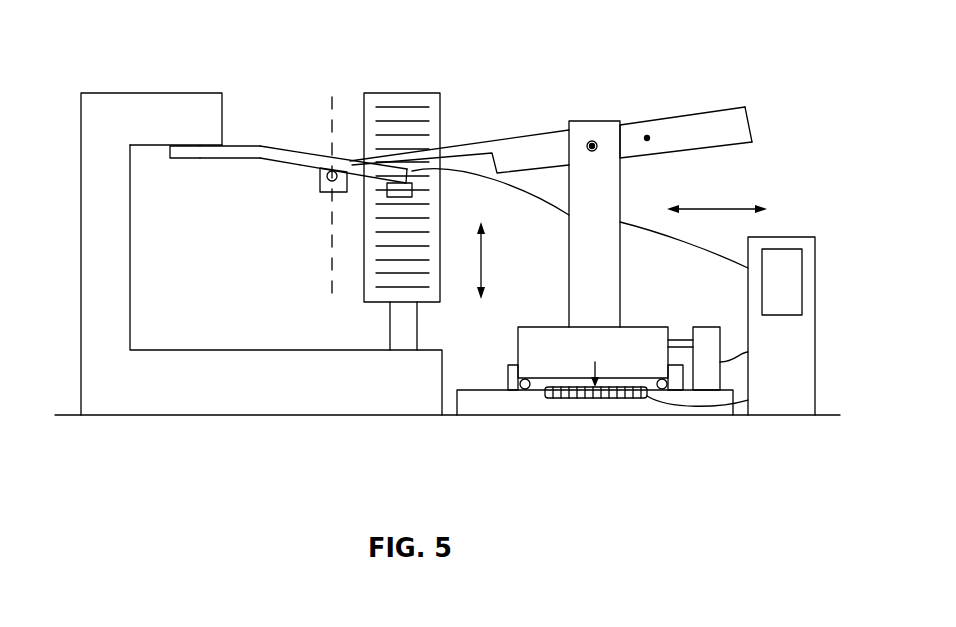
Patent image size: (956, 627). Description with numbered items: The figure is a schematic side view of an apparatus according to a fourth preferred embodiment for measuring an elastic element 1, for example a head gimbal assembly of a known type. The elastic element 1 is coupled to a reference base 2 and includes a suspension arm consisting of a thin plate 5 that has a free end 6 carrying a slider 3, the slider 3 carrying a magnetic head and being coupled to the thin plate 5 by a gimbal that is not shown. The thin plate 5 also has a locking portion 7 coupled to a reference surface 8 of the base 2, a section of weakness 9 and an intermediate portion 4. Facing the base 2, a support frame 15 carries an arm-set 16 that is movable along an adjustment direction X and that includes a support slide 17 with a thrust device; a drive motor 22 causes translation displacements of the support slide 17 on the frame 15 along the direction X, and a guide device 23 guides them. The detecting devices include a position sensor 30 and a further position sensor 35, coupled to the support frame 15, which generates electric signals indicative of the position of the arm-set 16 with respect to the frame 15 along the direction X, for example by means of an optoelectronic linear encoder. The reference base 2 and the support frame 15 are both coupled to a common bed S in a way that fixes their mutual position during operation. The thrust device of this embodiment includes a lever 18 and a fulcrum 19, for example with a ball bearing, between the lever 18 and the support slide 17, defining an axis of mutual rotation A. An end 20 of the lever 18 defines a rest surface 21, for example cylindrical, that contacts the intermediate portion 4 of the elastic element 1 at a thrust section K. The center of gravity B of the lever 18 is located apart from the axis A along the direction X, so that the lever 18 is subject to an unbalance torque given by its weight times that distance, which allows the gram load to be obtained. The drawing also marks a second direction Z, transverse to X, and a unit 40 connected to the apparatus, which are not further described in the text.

The elastic element 1 is at (288, 115).
The reference base 2 is at (178, 368).
The slider 3 is at (388, 192).
The intermediate portion 4 is at (302, 158).
The thin plate 5 is at (240, 143).
The free end 6 is at (407, 168).
The locking portion 7 is at (197, 150).
The reference surface 8 is at (147, 152).
The section of weakness 9 is at (263, 152).
The support frame 15 is at (682, 407).
The arm-set 16 is at (738, 85).
The support slide 17 is at (605, 275).
The lever 18 is at (738, 130).
The fulcrum 19 is at (592, 141).
The end of lever 20 is at (336, 170).
The rest surface 21 is at (327, 171).
The drive motor 22 is at (707, 340).
The guide device 23 is at (525, 389).
The position sensor 30 is at (437, 92).
The further position sensor 35 is at (598, 398).
The control unit 40 is at (807, 245).
The axis of mutual rotation A is at (596, 142).
The center of gravity of lever B is at (648, 137).
The thrust section K is at (330, 262).
The common bed S is at (78, 435).
The adjustment direction X is at (717, 192).
The Z direction Z is at (498, 260).